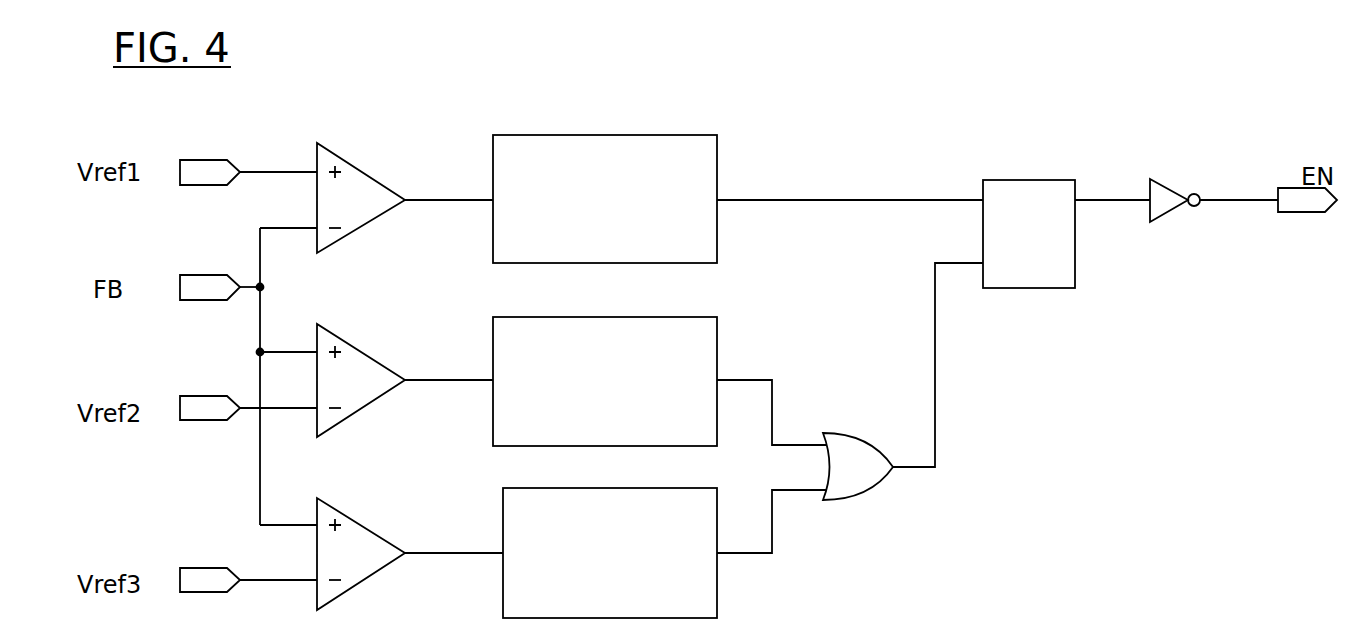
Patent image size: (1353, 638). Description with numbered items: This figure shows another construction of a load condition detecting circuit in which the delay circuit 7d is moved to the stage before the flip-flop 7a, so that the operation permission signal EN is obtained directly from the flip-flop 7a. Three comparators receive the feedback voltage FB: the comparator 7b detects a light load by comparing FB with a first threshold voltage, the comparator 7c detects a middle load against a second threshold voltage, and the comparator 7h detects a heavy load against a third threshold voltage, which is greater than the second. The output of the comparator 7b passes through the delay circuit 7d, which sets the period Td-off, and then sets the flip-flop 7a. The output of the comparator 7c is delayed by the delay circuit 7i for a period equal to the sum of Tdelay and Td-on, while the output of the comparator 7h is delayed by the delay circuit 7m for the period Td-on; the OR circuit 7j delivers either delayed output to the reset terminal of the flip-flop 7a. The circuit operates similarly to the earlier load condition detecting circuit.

The flip-flop 7a is at (1020, 180).
The comparator 7b is at (364, 178).
The comparator 7c is at (363, 353).
The comparator 7h is at (370, 528).
The delay circuit 7d is at (708, 168).
The delay circuit 7i is at (697, 342).
The delay circuit 7m is at (703, 600).
The OR circuit 7j is at (853, 433).